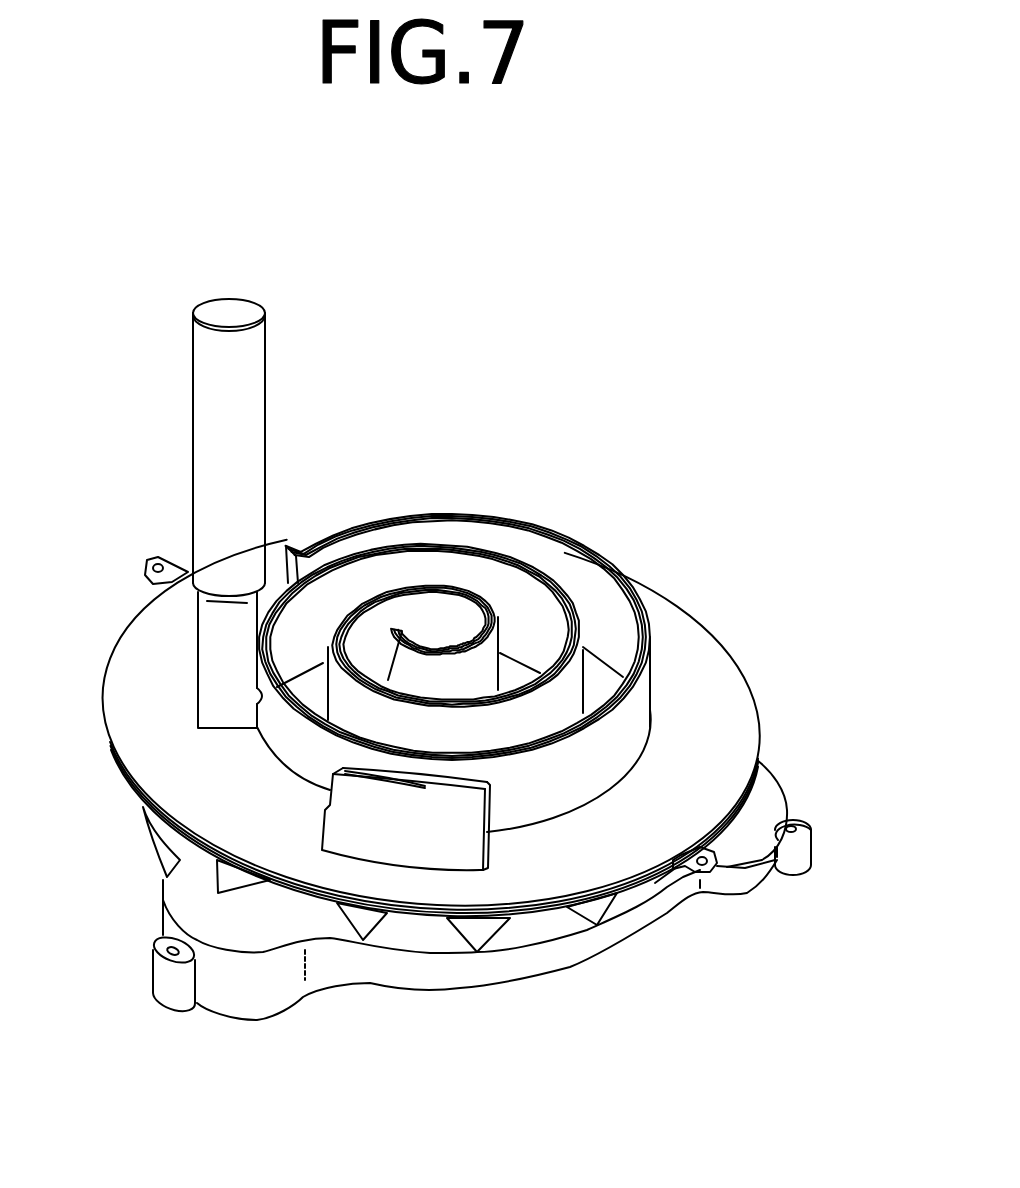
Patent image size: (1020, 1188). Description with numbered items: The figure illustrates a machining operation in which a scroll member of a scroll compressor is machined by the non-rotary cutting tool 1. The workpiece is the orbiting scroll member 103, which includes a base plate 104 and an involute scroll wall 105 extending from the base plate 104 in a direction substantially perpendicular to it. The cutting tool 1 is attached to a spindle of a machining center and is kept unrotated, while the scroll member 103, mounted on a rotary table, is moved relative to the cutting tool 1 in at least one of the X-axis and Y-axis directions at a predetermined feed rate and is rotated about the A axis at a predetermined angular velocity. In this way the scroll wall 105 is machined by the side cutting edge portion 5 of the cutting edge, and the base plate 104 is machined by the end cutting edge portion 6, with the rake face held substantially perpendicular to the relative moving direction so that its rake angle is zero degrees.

The non-rotary cutting tool 1 is at (158, 343).
The side cutting edge portion 5 is at (258, 697).
The end cutting edge portion 6 is at (228, 730).
The orbiting scroll member 103 is at (760, 561).
The base plate 104 is at (600, 678).
The scroll wall 105 is at (370, 540).